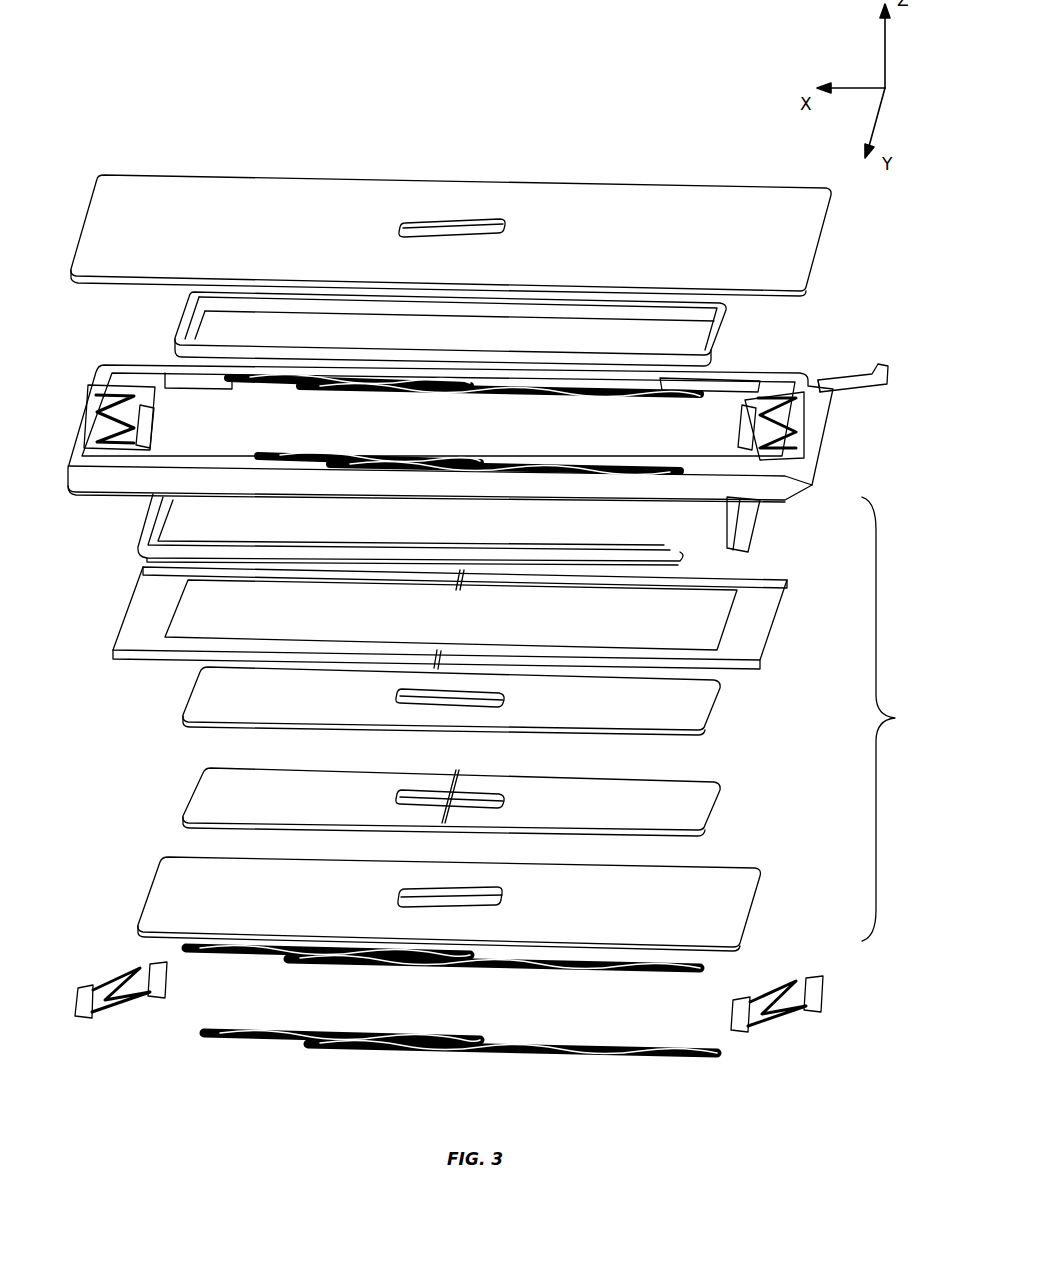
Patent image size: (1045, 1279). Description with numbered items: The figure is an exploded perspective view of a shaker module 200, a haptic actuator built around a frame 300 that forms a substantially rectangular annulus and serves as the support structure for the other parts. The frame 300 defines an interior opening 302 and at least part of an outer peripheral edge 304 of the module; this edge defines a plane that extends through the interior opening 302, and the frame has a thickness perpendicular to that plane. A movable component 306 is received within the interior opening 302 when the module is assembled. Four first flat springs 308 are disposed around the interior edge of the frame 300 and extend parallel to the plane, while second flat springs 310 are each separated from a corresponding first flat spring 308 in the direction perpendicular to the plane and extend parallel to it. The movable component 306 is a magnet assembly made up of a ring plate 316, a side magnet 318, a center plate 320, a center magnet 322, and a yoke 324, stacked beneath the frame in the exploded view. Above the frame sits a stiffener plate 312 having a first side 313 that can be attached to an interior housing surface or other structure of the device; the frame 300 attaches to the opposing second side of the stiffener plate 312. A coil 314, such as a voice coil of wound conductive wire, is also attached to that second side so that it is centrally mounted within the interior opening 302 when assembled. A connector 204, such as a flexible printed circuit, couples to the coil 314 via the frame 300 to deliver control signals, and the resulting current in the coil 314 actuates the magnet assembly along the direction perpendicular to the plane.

The shaker module 200 is at (133, 158).
The connector 204 is at (875, 368).
The frame 300 is at (444, 418).
The interior opening 302 is at (714, 425).
The outer peripheral edge 304 is at (106, 489).
The movable component 306 is at (897, 719).
The first flat springs 308 is at (160, 417).
The second flat springs 310 is at (85, 985).
The stiffener plate 312 is at (446, 210).
The first side 313 is at (288, 195).
The coil 314 is at (185, 310).
The ring plate 316 is at (762, 512).
The side magnet 318 is at (122, 623).
The center plate 320 is at (717, 703).
The center magnet 322 is at (717, 795).
The yoke 324 is at (148, 882).